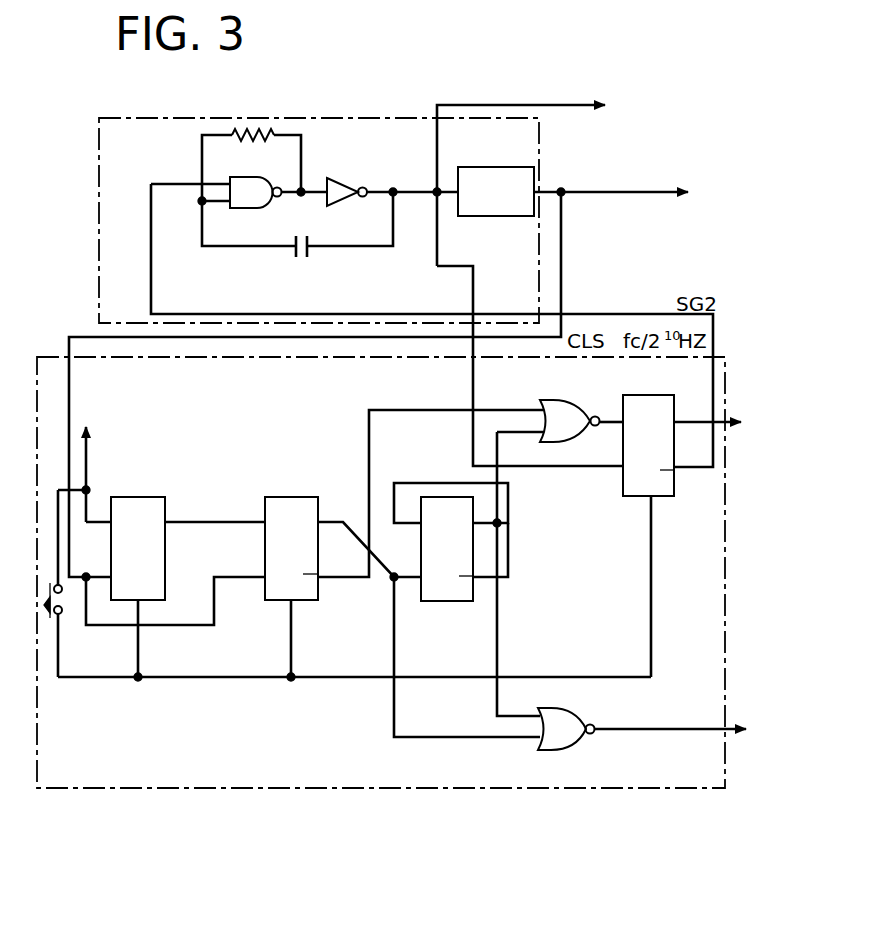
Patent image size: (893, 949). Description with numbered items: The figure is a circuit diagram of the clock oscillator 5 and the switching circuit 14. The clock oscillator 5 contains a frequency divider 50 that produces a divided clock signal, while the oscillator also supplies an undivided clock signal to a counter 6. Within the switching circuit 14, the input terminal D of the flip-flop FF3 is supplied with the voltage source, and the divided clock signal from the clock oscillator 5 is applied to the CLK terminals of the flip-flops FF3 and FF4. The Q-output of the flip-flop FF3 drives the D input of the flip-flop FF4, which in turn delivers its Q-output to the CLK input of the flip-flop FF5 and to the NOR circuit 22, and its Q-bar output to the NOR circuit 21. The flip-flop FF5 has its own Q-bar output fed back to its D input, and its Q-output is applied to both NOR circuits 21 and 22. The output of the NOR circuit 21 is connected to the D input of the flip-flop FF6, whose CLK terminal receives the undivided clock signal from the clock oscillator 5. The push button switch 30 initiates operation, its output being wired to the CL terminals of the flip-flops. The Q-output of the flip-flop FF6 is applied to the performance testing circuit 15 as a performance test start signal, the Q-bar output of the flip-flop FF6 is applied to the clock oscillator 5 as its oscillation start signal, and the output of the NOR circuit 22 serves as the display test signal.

The clock oscillator 5 is at (262, 118).
The frequency divider 50 is at (474, 165).
The counter 6 is at (676, 110).
The performance testing circuit 15 is at (737, 203).
The switching circuit 14 is at (724, 633).
The NOR circuit 21 is at (548, 400).
The NOR circuit 22 is at (578, 710).
The push button switch 30 is at (44, 620).
The flip-flop FF3 is at (141, 497).
The flip-flop FF4 is at (312, 600).
The flip-flop FF5 is at (437, 601).
The flip-flop FF6 is at (670, 536).